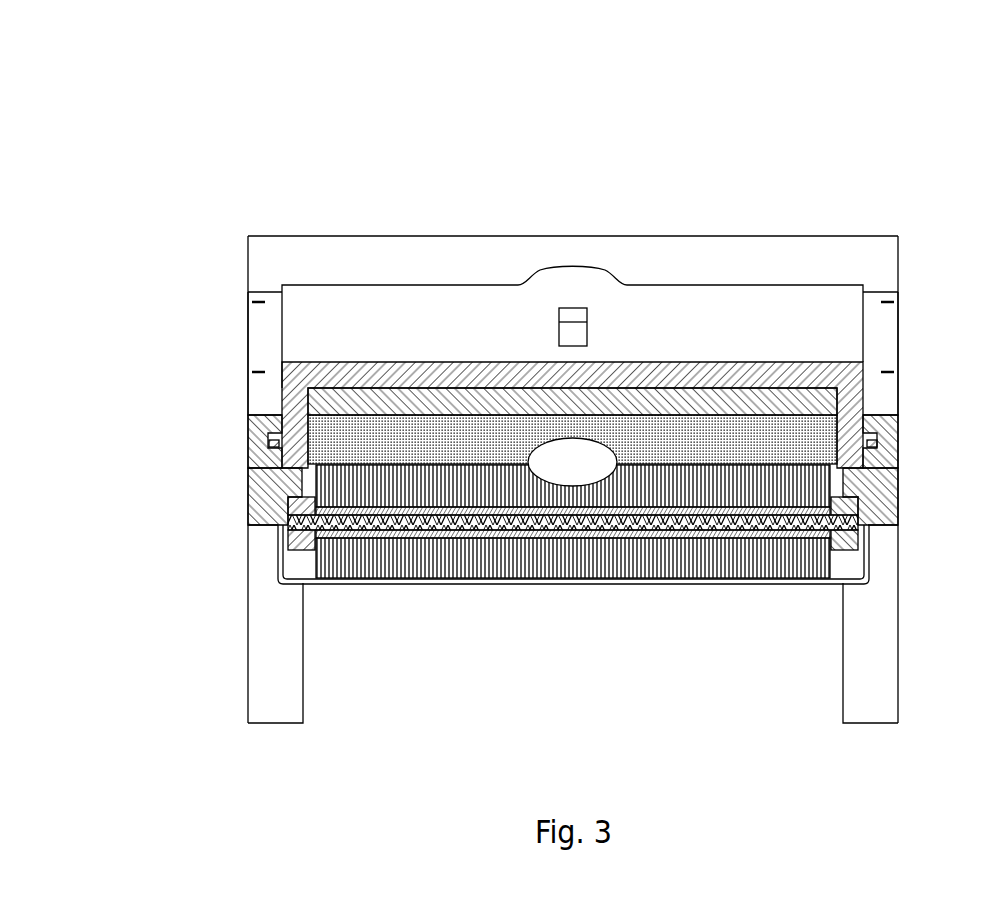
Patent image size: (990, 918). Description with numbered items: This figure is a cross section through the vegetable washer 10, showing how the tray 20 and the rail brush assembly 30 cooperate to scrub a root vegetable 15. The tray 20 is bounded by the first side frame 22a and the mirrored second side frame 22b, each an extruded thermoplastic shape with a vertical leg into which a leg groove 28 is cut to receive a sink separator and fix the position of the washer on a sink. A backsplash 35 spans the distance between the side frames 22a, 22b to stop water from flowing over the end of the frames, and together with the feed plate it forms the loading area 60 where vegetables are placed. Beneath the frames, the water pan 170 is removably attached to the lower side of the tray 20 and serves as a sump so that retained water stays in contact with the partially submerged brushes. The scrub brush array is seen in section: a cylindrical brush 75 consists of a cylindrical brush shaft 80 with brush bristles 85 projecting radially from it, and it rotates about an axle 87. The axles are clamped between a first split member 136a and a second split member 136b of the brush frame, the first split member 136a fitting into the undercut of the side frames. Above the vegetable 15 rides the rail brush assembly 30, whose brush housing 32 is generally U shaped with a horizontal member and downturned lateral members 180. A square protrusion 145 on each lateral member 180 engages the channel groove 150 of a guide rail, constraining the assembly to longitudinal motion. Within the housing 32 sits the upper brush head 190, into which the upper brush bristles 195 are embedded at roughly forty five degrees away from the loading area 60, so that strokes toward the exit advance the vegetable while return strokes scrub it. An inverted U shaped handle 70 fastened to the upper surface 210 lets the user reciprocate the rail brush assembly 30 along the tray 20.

The vegetable washer 10 is at (117, 146).
The tray 20 is at (213, 592).
The first side frame 22a is at (892, 485).
The second side frame 22b is at (255, 513).
The leg groove 28 is at (293, 657).
The backsplash 35 is at (392, 235).
The loading area 60 is at (608, 182).
The handle 70 is at (580, 311).
The rail brush assembly 30 is at (282, 362).
The brush housing 32 is at (282, 381).
The upper surface 210 is at (836, 362).
The upper brush head 190 is at (838, 393).
The upper brush bristles 195 is at (330, 439).
The lateral members 180 is at (282, 409).
The channel groove 150 is at (874, 437).
The protrusion 145 is at (250, 460).
The first split member 136a is at (850, 505).
The second split member 136b is at (868, 547).
The water pan 170 is at (420, 583).
The vegetable 15 is at (568, 462).
The cylindrical brush 75 is at (637, 577).
The cylindrical brush shaft 80 is at (777, 537).
The brush bristles 85 is at (742, 570).
The axle 87 is at (728, 520).